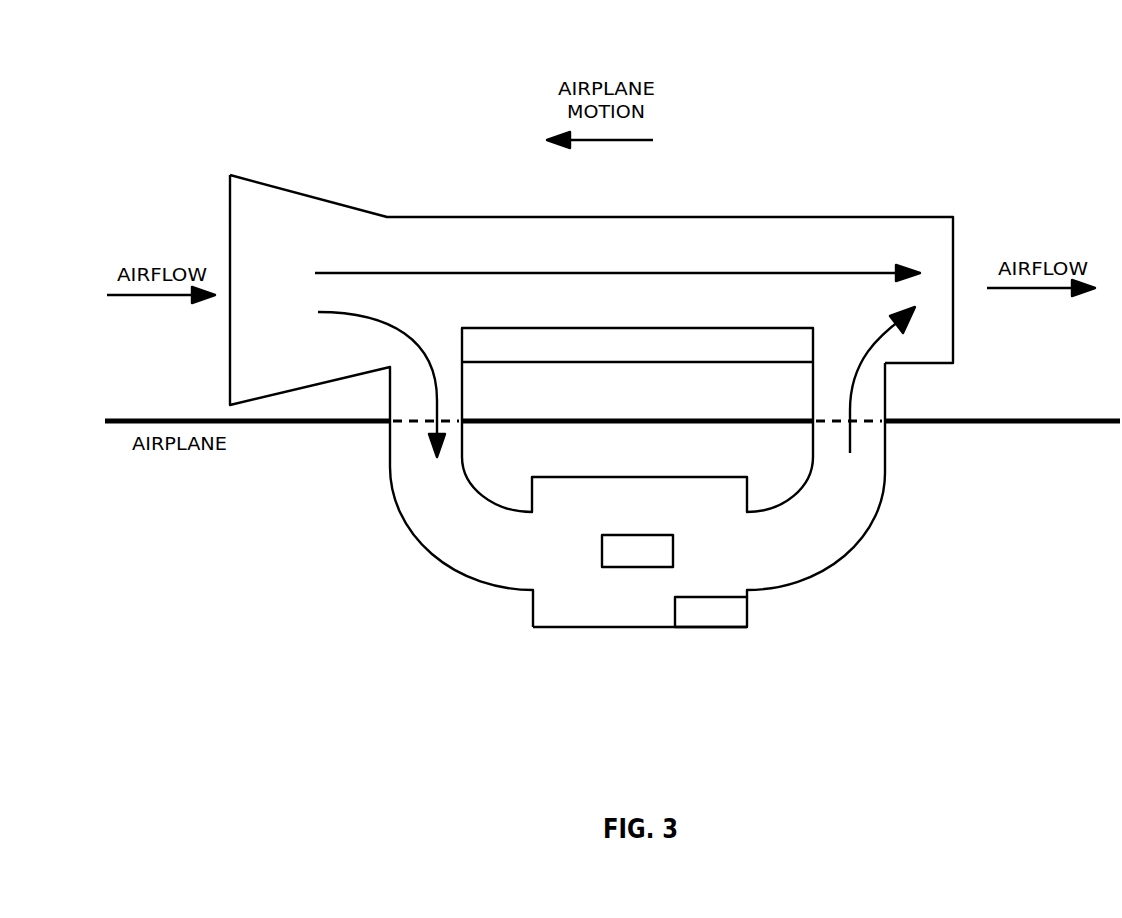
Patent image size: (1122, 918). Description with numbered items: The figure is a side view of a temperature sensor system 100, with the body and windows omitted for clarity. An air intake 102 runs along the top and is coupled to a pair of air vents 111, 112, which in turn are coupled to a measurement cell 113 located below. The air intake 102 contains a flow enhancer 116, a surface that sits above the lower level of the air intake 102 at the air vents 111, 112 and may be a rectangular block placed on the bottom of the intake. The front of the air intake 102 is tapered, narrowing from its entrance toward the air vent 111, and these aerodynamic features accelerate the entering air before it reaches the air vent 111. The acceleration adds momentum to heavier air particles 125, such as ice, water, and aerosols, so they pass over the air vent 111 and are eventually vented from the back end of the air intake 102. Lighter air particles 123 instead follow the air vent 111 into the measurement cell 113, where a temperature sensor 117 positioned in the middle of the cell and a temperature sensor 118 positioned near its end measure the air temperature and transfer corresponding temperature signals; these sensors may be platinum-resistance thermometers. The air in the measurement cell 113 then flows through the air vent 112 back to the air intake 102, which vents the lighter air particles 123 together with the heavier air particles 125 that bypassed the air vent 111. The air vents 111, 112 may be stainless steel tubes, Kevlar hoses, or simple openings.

The temperature sensor system 100 is at (882, 50).
The air intake 102 is at (752, 212).
The air vent 111 is at (392, 468).
The air vent 112 is at (886, 465).
The measurement cell 113 is at (612, 628).
The flow enhancer 116 is at (626, 328).
The temperature sensor 117 is at (657, 535).
The temperature sensor 118 is at (683, 597).
The lighter air particles 123 is at (590, 397).
The heavier air particles 125 is at (592, 276).